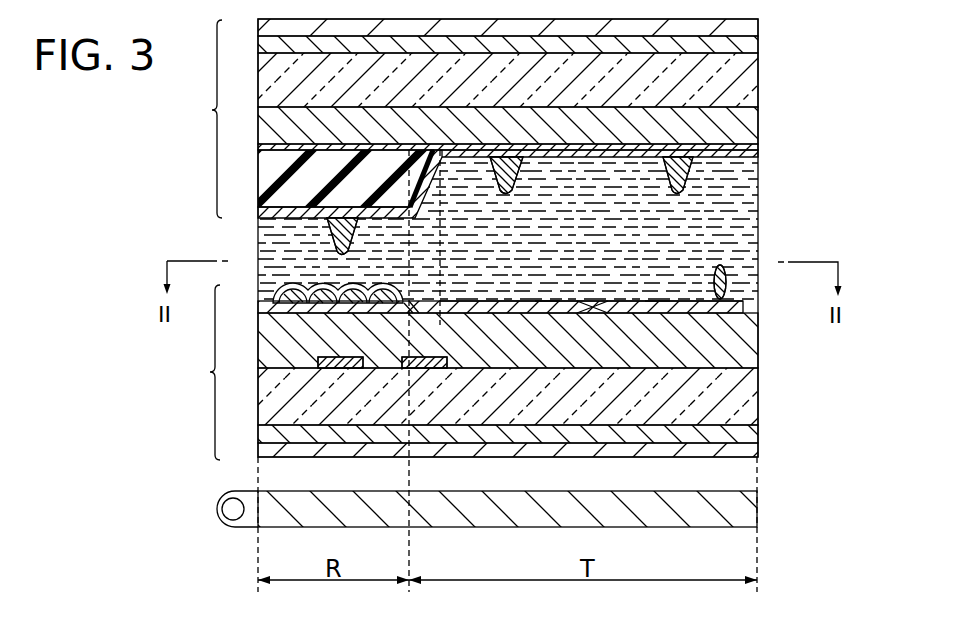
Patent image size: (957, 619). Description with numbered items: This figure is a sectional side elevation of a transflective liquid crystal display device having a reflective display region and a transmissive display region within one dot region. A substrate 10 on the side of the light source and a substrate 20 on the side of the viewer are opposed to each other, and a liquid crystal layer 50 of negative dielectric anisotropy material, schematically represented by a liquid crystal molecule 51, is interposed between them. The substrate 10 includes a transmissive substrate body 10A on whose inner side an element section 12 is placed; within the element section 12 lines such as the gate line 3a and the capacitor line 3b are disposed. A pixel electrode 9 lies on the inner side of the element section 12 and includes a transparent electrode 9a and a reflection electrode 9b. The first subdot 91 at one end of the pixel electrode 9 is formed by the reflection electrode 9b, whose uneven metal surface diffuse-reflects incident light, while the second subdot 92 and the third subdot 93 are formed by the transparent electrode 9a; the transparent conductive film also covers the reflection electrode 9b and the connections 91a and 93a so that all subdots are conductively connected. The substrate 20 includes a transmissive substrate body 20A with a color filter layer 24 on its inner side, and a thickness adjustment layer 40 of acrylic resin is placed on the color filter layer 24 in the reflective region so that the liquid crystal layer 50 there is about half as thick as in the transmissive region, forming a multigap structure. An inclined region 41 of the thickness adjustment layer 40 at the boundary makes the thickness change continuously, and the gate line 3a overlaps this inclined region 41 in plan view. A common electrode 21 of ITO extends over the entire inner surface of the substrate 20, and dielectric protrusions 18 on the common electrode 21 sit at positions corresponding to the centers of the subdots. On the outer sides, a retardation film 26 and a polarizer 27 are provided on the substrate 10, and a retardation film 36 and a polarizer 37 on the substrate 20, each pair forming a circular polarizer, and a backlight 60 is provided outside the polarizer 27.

The polarizer 37 is at (758, 22).
The retardation film 36 is at (758, 44).
The substrate body 20A is at (758, 82).
The color filter layer 24 is at (758, 126).
The common electrode 21 is at (758, 150).
The liquid crystal layer 50 is at (758, 210).
The liquid crystal molecule 51 is at (720, 265).
The protrusions 18 is at (520, 170).
The inclined region 41 is at (437, 194).
The thickness adjustment layer 40 is at (258, 160).
The substrate 20 is at (202, 119).
The first subdot 91 is at (305, 282).
The reflection electrode 9b is at (352, 292).
The connection 91a is at (428, 294).
The transparent electrode 9a is at (512, 299).
The second subdot 92 is at (549, 296).
The connection 93a is at (595, 296).
The third subdot 93 is at (660, 296).
The pixel electrode 9 is at (752, 304).
The capacitor line 3b is at (318, 357).
The gate line 3a is at (448, 356).
The element section 12 is at (762, 318).
The substrate 10 is at (201, 372).
The substrate body 10A is at (758, 396).
The retardation film 26 is at (758, 432).
The polarizer 27 is at (758, 452).
The backlight 60 is at (758, 502).